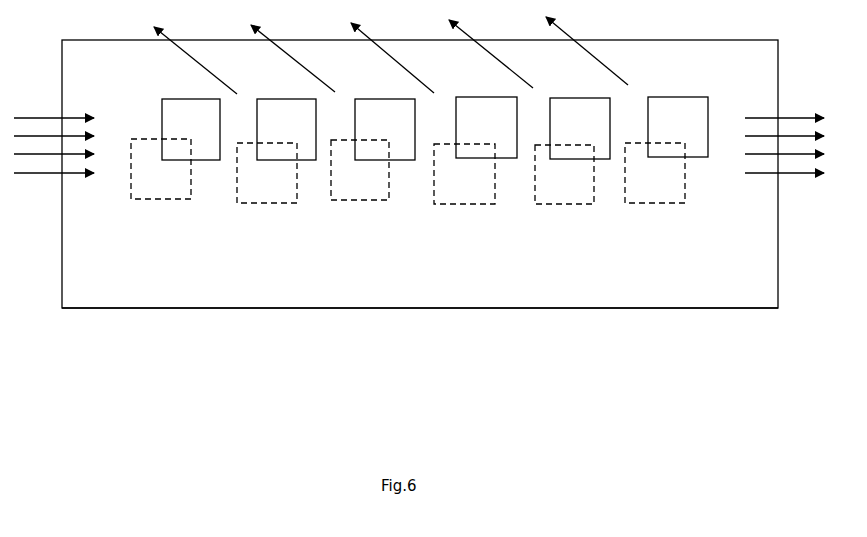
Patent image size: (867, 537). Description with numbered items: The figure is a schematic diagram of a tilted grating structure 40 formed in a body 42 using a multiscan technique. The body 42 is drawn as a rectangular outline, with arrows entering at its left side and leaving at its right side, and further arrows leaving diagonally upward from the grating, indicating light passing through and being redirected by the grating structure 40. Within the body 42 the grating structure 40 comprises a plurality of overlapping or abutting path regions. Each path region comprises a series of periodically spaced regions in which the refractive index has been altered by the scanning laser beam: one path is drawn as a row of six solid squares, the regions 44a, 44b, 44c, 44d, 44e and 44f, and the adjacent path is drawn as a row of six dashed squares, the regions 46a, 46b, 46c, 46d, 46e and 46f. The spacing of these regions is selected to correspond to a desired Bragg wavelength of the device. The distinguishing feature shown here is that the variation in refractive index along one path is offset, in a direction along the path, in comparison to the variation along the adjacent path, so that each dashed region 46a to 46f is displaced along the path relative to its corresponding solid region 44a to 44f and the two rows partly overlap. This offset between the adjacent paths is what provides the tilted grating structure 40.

The tilted grating structure 40 is at (88, 234).
The body 42 is at (265, 310).
The periodically spaced region 44a is at (178, 98).
The periodically spaced region 44b is at (278, 98).
The periodically spaced region 44c is at (368, 98).
The periodically spaced region 44d is at (467, 96).
The periodically spaced region 44e is at (577, 97).
The periodically spaced region 44f is at (685, 96).
The periodically spaced region 46a is at (171, 201).
The periodically spaced region 46b is at (273, 205).
The periodically spaced region 46c is at (361, 201).
The periodically spaced region 46d is at (462, 206).
The periodically spaced region 46e is at (562, 206).
The periodically spaced region 46f is at (650, 210).